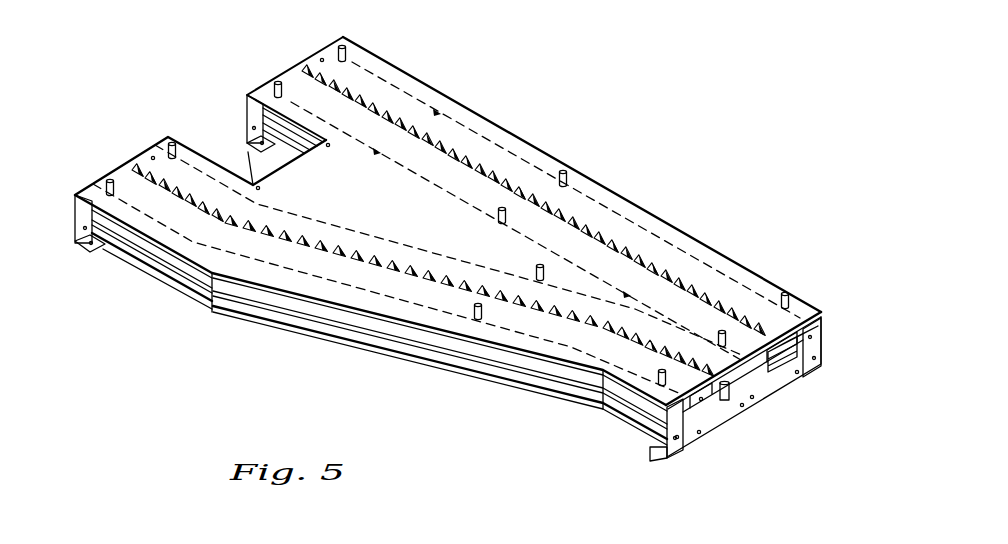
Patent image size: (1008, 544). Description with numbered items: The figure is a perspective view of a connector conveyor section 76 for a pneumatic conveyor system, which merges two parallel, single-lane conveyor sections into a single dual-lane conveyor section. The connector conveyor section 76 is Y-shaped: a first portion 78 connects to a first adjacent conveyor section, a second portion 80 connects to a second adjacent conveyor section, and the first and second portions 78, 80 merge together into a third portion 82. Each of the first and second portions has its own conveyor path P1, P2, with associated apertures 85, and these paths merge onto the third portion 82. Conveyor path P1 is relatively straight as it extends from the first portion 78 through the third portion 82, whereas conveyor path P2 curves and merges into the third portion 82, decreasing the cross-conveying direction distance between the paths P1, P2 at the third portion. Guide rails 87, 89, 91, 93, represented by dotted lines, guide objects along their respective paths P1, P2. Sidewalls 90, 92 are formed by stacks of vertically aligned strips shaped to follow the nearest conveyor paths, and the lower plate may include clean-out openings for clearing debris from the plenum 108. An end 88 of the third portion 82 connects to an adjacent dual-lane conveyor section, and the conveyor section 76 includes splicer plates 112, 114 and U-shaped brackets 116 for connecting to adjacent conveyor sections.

The connector conveyor section 76 is at (651, 103).
The first portion 78 is at (428, 71).
The second portion 80 is at (124, 285).
The third portion 82 is at (715, 226).
The apertures 85 is at (474, 170).
The guide rail 87 is at (604, 206).
The end 88 is at (761, 429).
The guide rail 89 is at (397, 163).
The sidewall 90 is at (527, 377).
The guide rail 91 is at (356, 231).
The sidewall 92 is at (777, 373).
The guide rail 93 is at (408, 306).
The plenum 108 is at (718, 412).
The splicer plate 112 is at (805, 326).
The splicer plate 114 is at (740, 412).
The U-shaped brackets 116 is at (253, 118).
The conveyor path P1 is at (433, 140).
The conveyor path P2 is at (282, 258).